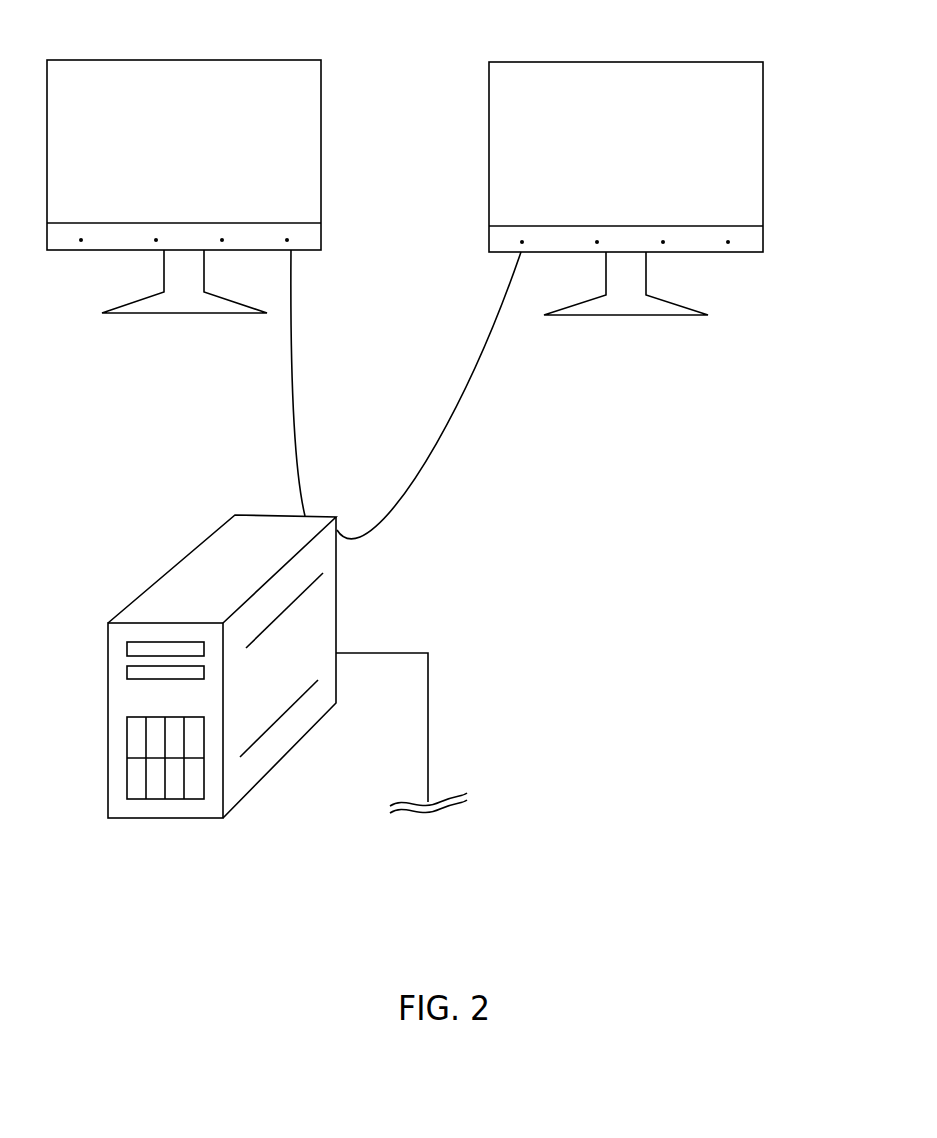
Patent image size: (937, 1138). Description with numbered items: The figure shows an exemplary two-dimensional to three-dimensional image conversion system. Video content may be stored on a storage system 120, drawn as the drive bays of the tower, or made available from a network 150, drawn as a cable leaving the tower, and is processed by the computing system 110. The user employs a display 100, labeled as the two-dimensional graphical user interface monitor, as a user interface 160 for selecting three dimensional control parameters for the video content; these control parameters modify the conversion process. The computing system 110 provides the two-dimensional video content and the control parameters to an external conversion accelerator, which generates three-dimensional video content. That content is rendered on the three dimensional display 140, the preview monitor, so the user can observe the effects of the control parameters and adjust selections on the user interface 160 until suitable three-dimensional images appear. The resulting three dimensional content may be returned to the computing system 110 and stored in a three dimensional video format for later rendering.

The display 100 is at (321, 118).
The user interface 160 is at (183, 155).
The three dimensional display 140 is at (763, 112).
The computing system 110 is at (336, 680).
The storage system 120 is at (127, 758).
The network 150 is at (428, 758).